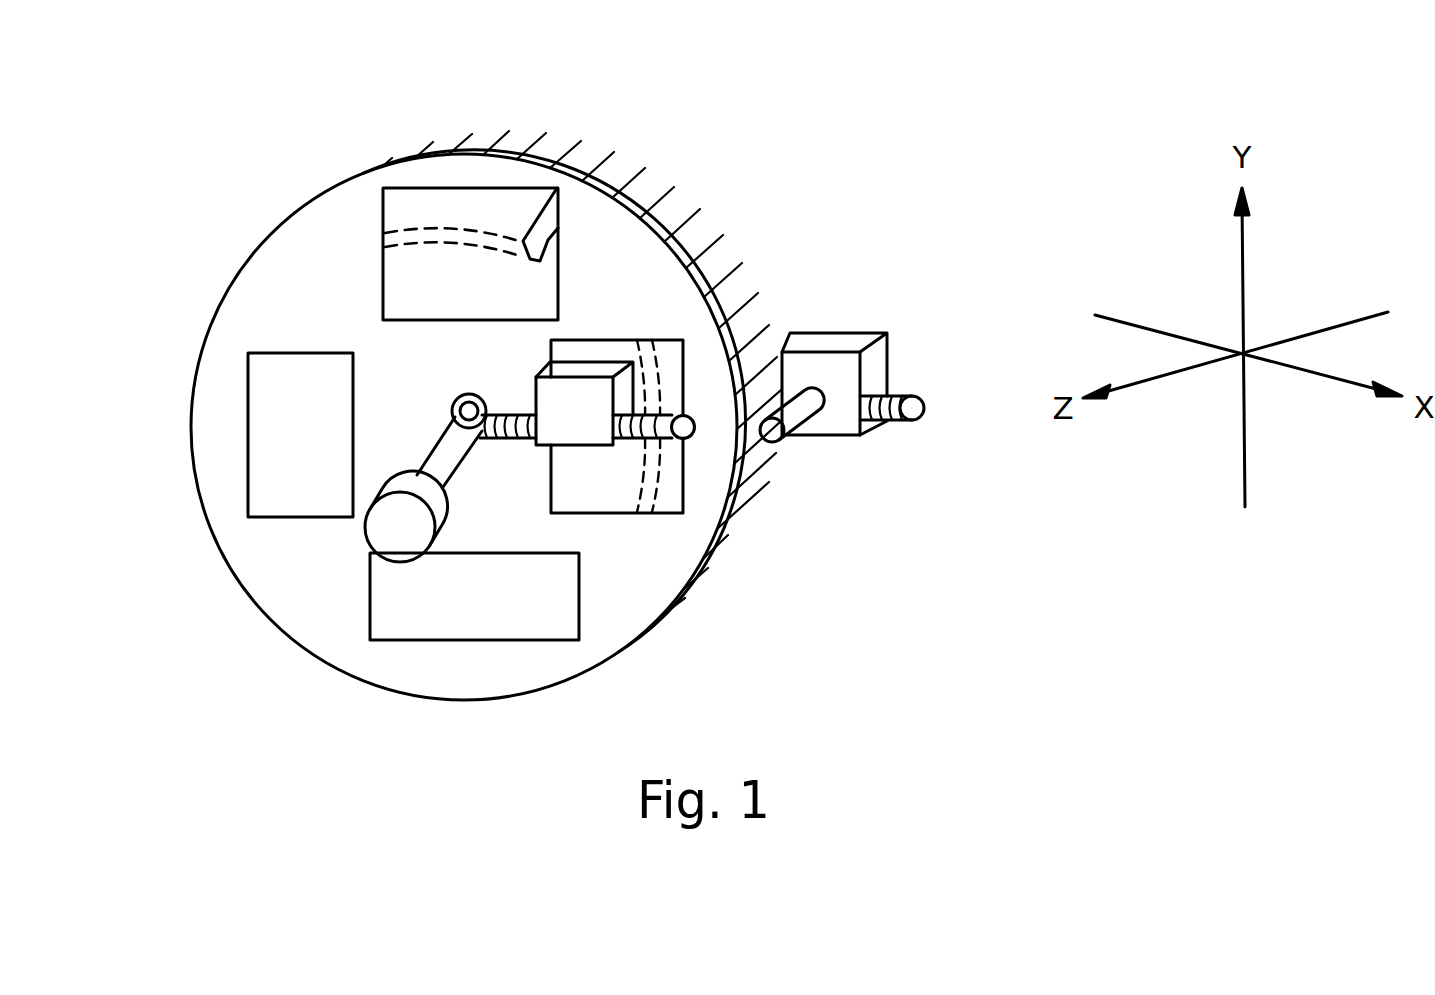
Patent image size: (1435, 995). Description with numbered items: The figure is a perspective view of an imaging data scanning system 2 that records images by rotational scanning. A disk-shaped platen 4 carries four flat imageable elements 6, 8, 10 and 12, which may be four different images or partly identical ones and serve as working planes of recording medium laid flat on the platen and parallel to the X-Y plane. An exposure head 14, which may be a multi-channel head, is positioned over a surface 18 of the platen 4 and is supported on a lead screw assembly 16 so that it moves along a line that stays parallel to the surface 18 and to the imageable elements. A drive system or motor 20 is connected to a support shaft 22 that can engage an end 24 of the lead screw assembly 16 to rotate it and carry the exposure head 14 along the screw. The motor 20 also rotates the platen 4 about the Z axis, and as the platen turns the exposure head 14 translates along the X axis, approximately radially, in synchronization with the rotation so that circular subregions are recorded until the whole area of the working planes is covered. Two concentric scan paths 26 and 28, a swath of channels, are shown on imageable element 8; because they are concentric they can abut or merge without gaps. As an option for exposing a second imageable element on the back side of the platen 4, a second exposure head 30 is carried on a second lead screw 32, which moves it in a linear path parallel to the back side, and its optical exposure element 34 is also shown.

The imaging data scanning system 2 is at (925, 574).
The platen 4 is at (703, 580).
The flat imageable element 6 is at (673, 492).
The flat imageable element 8 is at (467, 207).
The flat imageable element 10 is at (267, 432).
The flat imageable element 12 is at (449, 618).
The exposure head 14 is at (577, 392).
The lead screw assembly 16 is at (658, 413).
The surface of the platen 18 is at (712, 457).
The motor 20 is at (380, 523).
The support shaft 22 is at (440, 465).
The end of the lead screw assembly 24 is at (463, 400).
The concentric scan path 26 is at (521, 239).
The concentric scan path 28 is at (550, 238).
The second exposure head 30 is at (878, 360).
The second lead screw 32 is at (918, 400).
The optical exposure element 34 is at (795, 417).